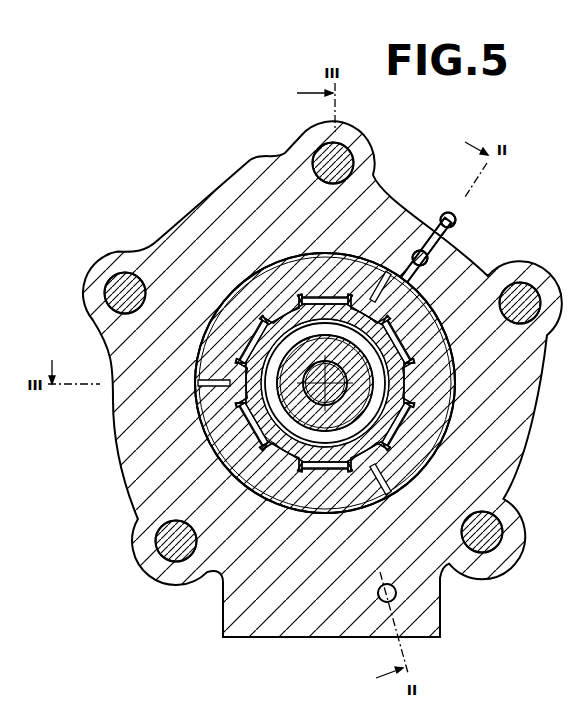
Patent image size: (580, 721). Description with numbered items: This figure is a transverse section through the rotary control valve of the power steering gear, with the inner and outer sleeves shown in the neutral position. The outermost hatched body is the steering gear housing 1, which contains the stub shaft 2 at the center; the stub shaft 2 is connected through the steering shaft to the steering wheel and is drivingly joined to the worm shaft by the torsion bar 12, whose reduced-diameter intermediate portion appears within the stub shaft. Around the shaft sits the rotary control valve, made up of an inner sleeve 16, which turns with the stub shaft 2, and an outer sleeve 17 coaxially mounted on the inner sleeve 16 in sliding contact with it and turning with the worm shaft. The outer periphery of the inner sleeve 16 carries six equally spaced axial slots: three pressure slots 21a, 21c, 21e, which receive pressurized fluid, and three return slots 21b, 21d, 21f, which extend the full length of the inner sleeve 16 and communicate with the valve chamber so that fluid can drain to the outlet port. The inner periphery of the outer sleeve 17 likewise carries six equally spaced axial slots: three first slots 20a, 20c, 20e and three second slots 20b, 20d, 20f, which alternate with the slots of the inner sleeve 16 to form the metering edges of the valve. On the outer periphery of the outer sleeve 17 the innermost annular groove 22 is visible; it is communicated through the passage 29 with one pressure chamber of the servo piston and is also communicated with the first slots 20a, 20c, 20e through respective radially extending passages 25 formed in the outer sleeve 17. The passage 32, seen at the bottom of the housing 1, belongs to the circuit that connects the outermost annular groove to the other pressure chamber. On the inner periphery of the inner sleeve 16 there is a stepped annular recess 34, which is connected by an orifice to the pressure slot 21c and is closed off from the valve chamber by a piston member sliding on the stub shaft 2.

The steering gear housing 1 is at (353, 142).
The stub shaft 2 is at (353, 362).
The torsion bar 12 is at (403, 402).
The inner sleeve 16 is at (268, 441).
The outer sleeve 17 is at (218, 333).
The first slot 20a is at (387, 310).
The second slot 20b is at (413, 372).
The first slot 20c is at (395, 460).
The second slot 20d is at (277, 468).
The first slot 20e is at (236, 404).
The second slot 20f is at (265, 300).
The pressure slot 21a is at (400, 340).
The return slot 21b is at (400, 425).
The pressure slot 21c is at (327, 468).
The return slot 21d is at (243, 432).
The pressure slot 21e is at (238, 352).
The return slot 21f is at (320, 298).
The annular groove 22 is at (291, 257).
The radially extending passage 25 is at (378, 278).
The passage 29 is at (443, 235).
The passage 32 is at (396, 593).
The stepped annular recess 34 is at (223, 310).